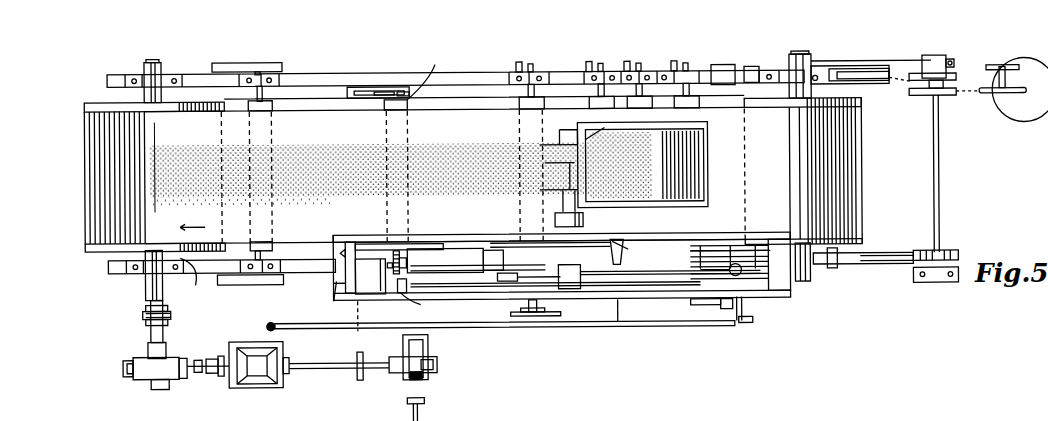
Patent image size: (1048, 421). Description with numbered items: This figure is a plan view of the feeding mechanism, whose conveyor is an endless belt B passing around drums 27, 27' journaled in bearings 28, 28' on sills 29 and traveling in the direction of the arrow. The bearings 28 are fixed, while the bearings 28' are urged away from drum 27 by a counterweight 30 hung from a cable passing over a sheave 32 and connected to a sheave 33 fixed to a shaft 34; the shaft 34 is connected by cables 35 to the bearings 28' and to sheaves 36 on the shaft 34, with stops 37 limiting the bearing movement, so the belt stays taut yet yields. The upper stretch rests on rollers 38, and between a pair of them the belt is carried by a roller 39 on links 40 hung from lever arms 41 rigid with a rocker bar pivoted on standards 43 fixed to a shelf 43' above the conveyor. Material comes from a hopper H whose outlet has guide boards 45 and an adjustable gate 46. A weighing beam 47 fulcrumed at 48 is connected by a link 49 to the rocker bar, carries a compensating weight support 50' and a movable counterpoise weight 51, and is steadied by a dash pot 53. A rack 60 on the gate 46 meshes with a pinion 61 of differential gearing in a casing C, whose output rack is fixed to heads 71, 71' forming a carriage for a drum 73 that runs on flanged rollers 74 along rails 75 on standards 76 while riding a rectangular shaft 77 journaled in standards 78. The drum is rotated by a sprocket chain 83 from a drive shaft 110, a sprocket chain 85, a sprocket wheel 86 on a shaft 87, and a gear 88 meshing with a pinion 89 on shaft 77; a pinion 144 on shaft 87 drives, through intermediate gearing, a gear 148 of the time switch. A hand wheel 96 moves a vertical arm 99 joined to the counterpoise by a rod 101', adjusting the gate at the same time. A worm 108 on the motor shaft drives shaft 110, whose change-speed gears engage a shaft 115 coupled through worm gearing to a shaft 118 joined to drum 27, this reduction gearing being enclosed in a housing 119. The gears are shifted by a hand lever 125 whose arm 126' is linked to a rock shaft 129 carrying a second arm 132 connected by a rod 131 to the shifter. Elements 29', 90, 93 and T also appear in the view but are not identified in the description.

The drum 27 is at (406, 192).
The drum 27' is at (822, 170).
The bearings 28 is at (145, 180).
The bearings 28' is at (788, 176).
The sills 29 is at (221, 275).
The upper rail 29' is at (455, 77).
The counterweight 30 is at (1028, 114).
The sheave 32 is at (1003, 102).
The sheave 33 is at (950, 99).
The shaft 34 is at (941, 157).
The cables 35 is at (898, 72).
The sheaves 36 is at (956, 64).
The stops 37 is at (735, 66).
The rollers 38 is at (545, 97).
The roller 39 is at (428, 73).
The links 40 is at (405, 86).
The lever arms 41 is at (382, 86).
The standards 43 is at (354, 99).
The shelf 43' is at (362, 71).
The guide boards 45 is at (562, 140).
The adjustable gate 46 is at (596, 132).
The weighing beam 47 is at (620, 306).
The fulcrum 48 is at (512, 272).
The link 49 is at (490, 326).
The compensating weight support 50' is at (728, 269).
The counterpoise weight 51 is at (580, 270).
The dash pot 53 is at (690, 282).
The rack 60 is at (620, 165).
The pinion 61 is at (609, 174).
The carriage head 71 is at (555, 285).
The carriage head 71' is at (670, 282).
The drum 73 is at (695, 248).
The flanged rollers 74 is at (460, 275).
The rails 75 is at (470, 248).
The standards 76 is at (480, 258).
The shaft 77 is at (500, 290).
The standards 78 is at (410, 282).
The sprocket chain 83 is at (358, 318).
The sprocket chain 85 is at (340, 288).
The sprocket wheel 86 is at (345, 250).
The shaft 87 is at (355, 237).
The gear 88 is at (405, 255).
The pinion 89 is at (430, 248).
The bracket 90 is at (612, 296).
The wedge 93 is at (622, 245).
The hand wheel 96 is at (560, 314).
The vertical arm 99 is at (420, 307).
The rod 101' is at (550, 222).
The worm 108 is at (424, 405).
The drive shaft 110 is at (375, 374).
The shaft 115 is at (194, 374).
The shaft 118 is at (150, 333).
The housing 119 is at (258, 383).
The hand lever 125 is at (720, 306).
The arm 126' is at (760, 308).
The rock shaft 129 is at (752, 321).
The rod 131 is at (515, 326).
The second arm 132 is at (742, 326).
The pinion 144 is at (396, 248).
The gear 148 is at (338, 252).
The hopper H is at (690, 172).
The endless belt B is at (765, 161).
The casing C is at (585, 220).
The table T is at (370, 276).